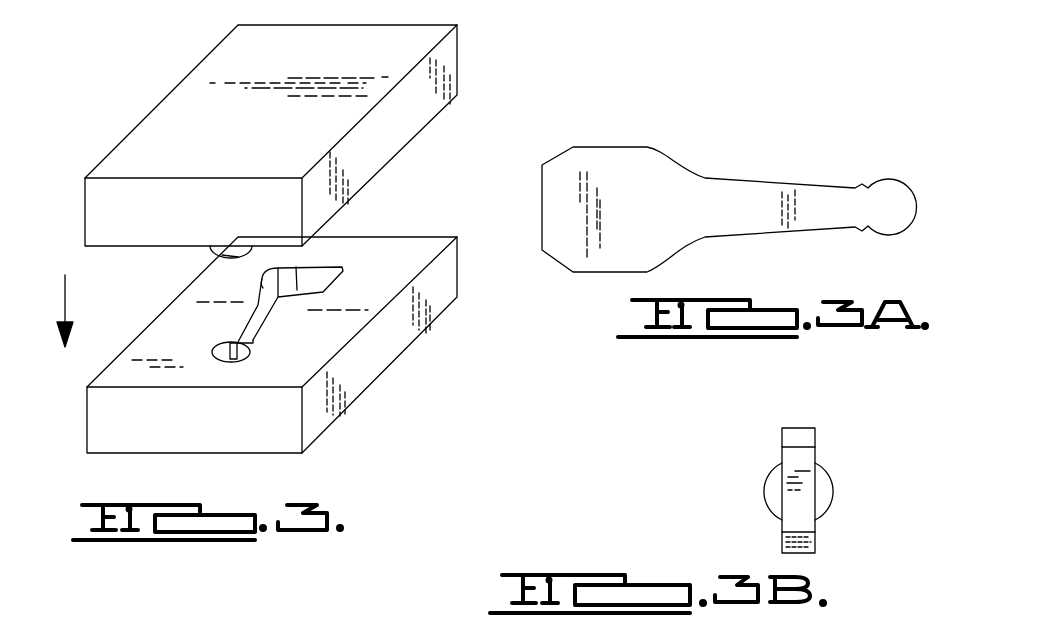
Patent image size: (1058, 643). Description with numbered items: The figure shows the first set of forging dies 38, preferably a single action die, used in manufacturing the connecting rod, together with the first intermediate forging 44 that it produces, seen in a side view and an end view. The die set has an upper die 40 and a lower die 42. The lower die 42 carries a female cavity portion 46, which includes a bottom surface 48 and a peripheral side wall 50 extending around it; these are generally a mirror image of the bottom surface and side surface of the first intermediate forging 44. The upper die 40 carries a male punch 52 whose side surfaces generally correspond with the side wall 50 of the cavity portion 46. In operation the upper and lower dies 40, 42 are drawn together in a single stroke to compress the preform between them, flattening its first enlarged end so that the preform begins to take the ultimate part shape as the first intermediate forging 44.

In FIG. 3, the first set of forging dies 38 is at (110, 99).
In FIG. 3, the upper die 40 is at (268, 127).
In FIG. 3, the lower die 42 is at (353, 378).
In FIG. 3A, the first intermediate forging 44 is at (704, 161).
In FIG. 3B, the first intermediate forging 44 is at (757, 470).
In FIG. 3, the cavity portion 46 is at (320, 272).
In FIG. 3, the bottom surface 48 is at (281, 304).
In FIG. 3, the peripheral side wall 50 is at (259, 281).
In FIG. 3, the punch 52 is at (221, 257).